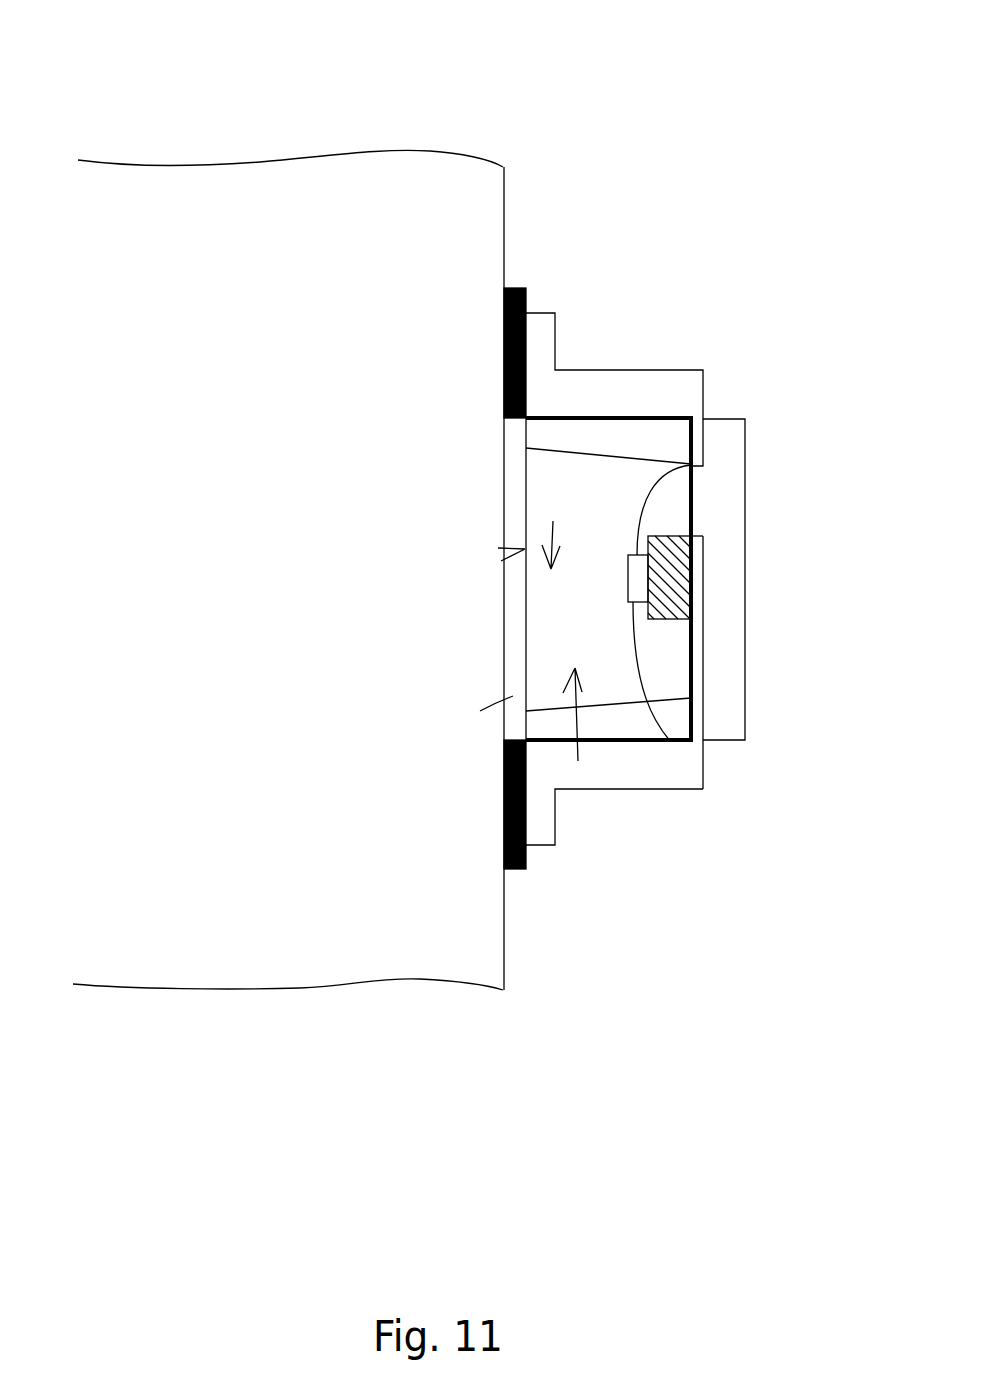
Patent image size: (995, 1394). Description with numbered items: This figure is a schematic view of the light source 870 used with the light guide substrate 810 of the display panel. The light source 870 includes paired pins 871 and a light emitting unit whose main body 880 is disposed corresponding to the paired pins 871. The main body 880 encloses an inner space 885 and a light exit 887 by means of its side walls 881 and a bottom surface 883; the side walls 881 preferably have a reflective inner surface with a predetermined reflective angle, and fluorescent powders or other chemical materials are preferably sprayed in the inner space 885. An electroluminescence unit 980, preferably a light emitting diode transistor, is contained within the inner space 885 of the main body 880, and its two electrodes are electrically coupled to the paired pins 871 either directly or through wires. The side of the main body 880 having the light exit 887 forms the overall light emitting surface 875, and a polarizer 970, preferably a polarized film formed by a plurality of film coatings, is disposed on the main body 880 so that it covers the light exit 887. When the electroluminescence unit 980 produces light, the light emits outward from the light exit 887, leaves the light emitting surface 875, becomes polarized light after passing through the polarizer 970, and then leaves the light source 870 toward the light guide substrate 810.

The light source 870 is at (95, 37).
The light guide substrate 810 is at (448, 198).
The paired pins 871 is at (648, 763).
The light emitting surface 875 is at (525, 548).
The main body 880 is at (727, 495).
The side walls 881 is at (633, 437).
The bottom surface 883 is at (708, 608).
The inner space 885 is at (578, 760).
The light exit 887 is at (553, 520).
The polarizer 970 is at (480, 710).
The electroluminescence unit 980 is at (670, 740).